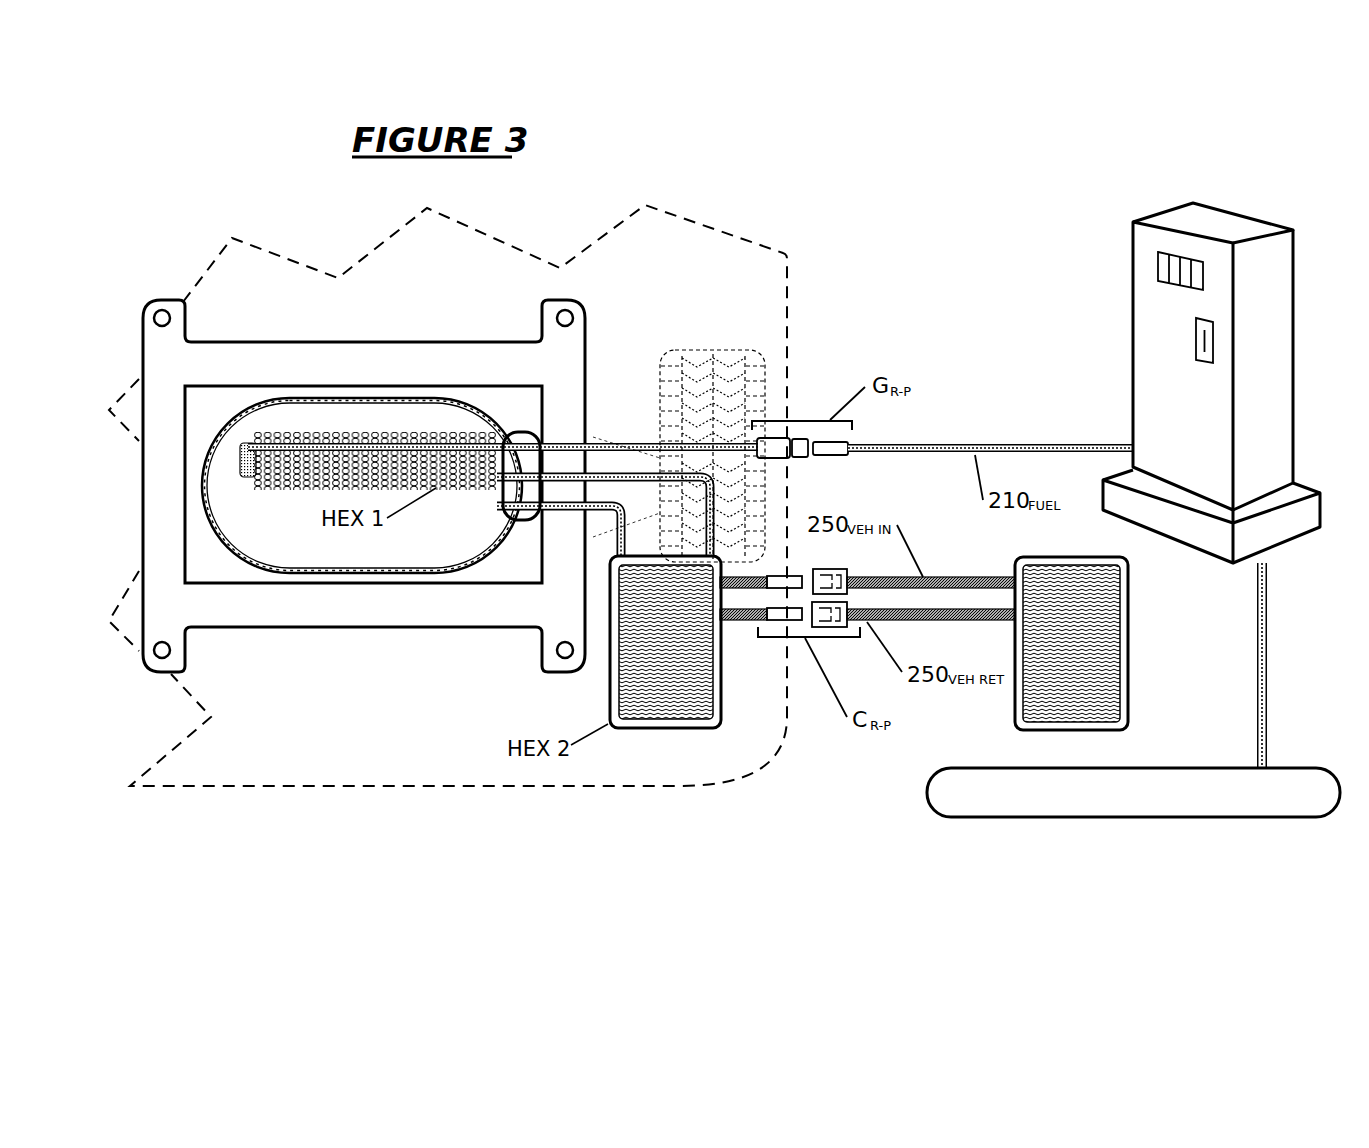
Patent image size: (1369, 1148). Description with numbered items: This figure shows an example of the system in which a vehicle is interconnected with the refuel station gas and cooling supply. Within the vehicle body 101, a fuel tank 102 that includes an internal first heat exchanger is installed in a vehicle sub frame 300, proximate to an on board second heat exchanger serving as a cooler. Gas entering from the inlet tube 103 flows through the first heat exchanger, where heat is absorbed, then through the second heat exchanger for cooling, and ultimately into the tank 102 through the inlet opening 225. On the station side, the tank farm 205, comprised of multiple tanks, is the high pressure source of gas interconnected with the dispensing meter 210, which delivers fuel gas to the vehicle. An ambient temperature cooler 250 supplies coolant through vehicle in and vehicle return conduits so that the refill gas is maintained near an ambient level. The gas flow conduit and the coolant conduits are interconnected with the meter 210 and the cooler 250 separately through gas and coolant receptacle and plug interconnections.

The vehicle 101 is at (688, 255).
The vehicle sub frame 300 is at (562, 352).
The fuel tank 102 is at (297, 567).
The inlet tube 103 is at (710, 443).
The inlet opening 225 is at (496, 505).
The dispensing meter 210 is at (1137, 340).
The ambient temperature cooler 250 is at (1128, 650).
The tank farm 205 is at (1055, 817).